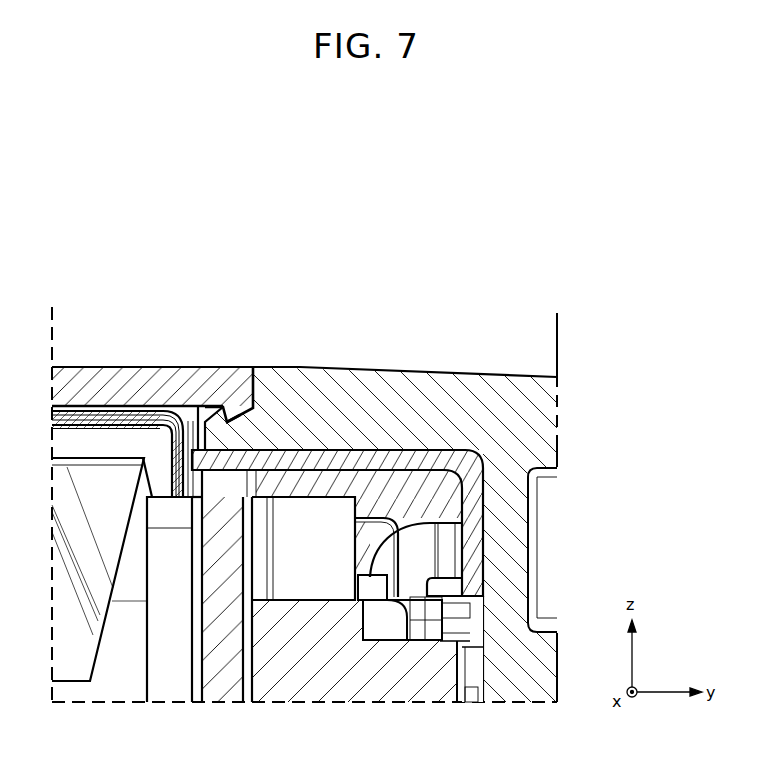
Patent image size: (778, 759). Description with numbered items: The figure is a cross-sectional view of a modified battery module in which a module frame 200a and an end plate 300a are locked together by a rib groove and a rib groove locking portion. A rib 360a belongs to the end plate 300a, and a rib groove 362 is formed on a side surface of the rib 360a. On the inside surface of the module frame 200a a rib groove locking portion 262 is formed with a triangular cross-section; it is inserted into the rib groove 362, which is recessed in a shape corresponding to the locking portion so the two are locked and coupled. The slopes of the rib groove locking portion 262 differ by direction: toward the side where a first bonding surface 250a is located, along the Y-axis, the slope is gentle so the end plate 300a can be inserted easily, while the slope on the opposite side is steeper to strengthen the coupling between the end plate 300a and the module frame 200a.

The module frame 200a is at (128, 378).
The first bonding surface 250a is at (252, 388).
The rib groove locking portion 262 is at (228, 404).
The end plate 300a is at (448, 403).
The rib 360a is at (195, 405).
The rib groove 362 is at (258, 438).